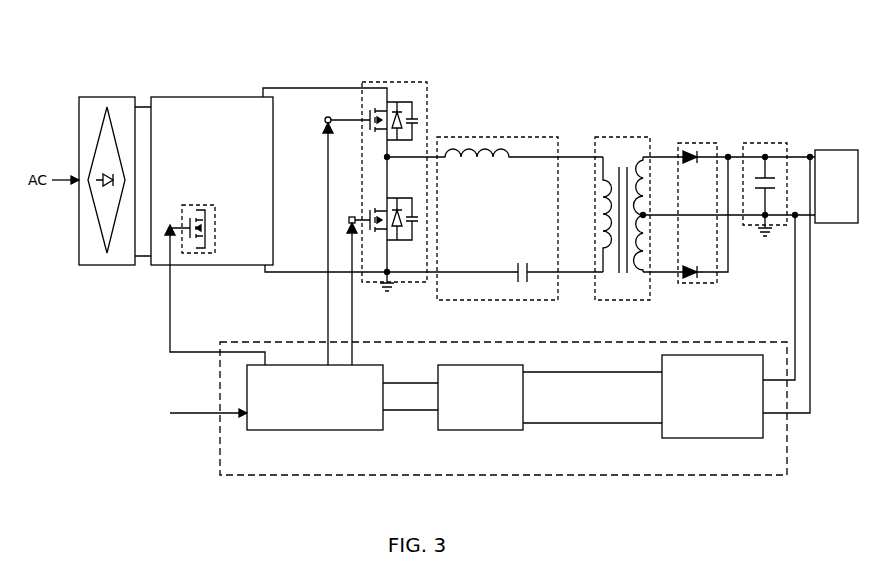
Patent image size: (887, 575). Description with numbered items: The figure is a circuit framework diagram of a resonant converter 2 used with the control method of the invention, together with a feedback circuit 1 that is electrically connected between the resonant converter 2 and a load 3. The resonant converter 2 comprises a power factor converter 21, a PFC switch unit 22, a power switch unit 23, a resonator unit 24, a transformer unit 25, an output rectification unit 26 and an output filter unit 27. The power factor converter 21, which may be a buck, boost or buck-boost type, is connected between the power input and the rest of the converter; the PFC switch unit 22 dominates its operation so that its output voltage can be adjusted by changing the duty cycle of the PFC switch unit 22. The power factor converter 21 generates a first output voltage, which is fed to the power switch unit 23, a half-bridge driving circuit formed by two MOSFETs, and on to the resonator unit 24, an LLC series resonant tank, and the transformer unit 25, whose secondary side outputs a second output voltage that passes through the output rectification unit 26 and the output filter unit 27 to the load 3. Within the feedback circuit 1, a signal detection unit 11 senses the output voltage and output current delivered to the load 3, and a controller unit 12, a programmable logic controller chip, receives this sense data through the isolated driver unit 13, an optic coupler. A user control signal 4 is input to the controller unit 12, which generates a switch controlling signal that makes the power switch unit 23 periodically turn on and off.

The feedback circuit 1 is at (220, 457).
The resonant converter 2 is at (111, 62).
The load 3 is at (838, 223).
The user control signal 4 is at (201, 413).
The signal detection unit 11 is at (695, 439).
The controller unit 12 is at (250, 431).
The isolated driver unit 13 is at (515, 431).
The power factor converter 21 is at (166, 97).
The PFC switch unit 22 is at (193, 254).
The power switch unit 23 is at (428, 107).
The resonator unit 24 is at (482, 137).
The transformer unit 25 is at (595, 137).
The output rectification unit 26 is at (716, 145).
The output filter unit 27 is at (787, 145).